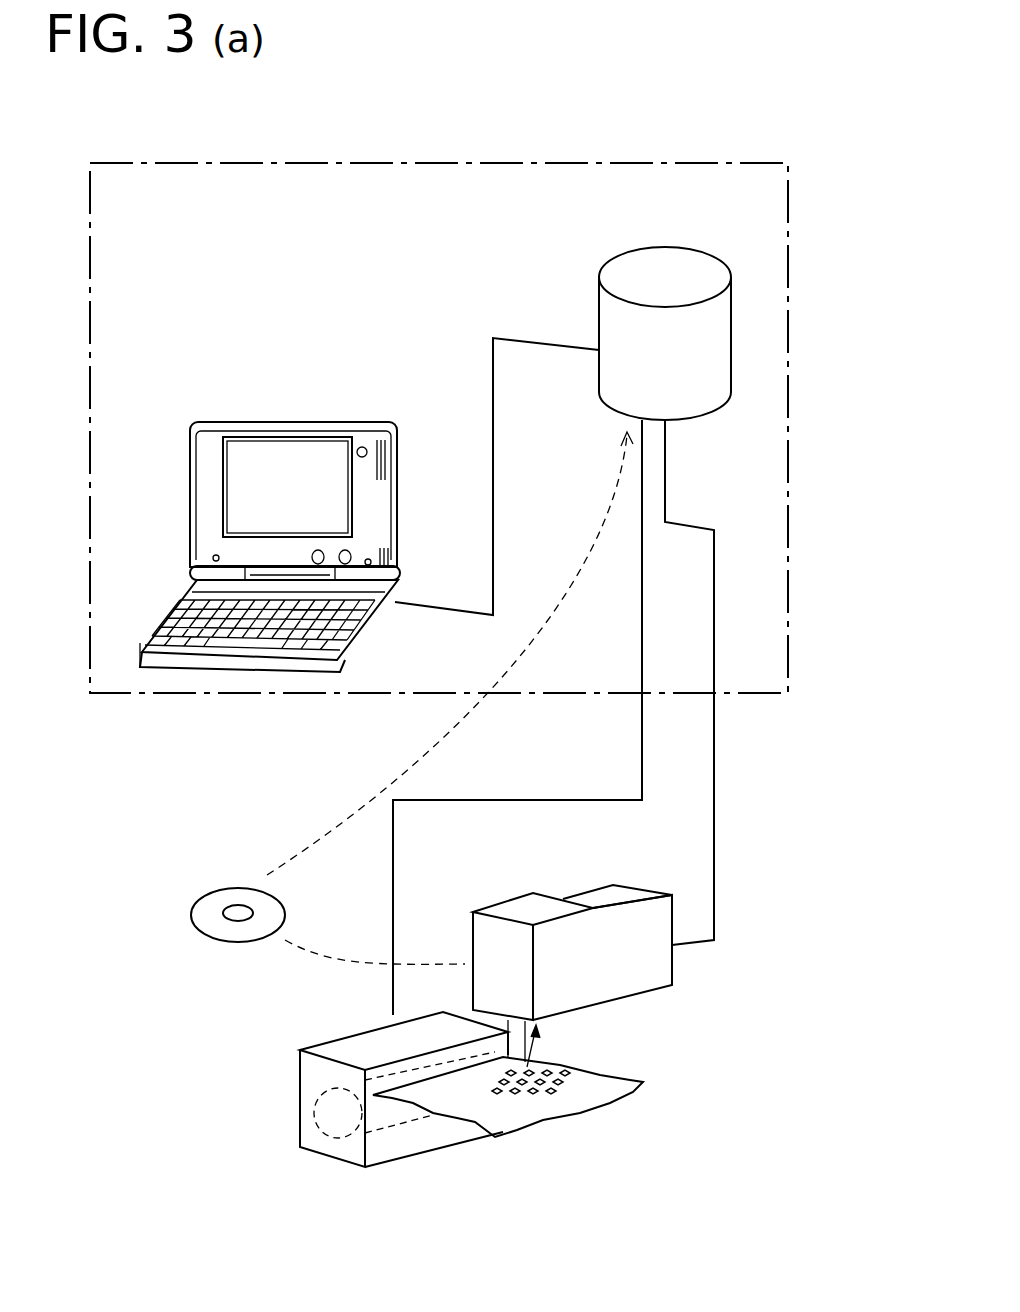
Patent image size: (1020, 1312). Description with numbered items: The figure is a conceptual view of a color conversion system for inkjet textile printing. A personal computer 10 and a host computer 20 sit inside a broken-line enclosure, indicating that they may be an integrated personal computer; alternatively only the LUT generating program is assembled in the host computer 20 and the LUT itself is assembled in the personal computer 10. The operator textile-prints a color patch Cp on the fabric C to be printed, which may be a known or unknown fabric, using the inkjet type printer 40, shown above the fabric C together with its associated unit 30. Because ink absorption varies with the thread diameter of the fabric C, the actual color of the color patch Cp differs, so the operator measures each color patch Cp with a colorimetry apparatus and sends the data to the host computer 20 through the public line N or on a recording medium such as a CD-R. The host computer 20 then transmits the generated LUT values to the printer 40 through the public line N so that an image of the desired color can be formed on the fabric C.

The personal computer 10 is at (285, 414).
The host computer 20 is at (660, 252).
The printer 30 is at (610, 990).
The inkjet type printer 40 is at (430, 1150).
The public line N is at (493, 462).
The fabric C is at (553, 1120).
The color patch Cp is at (585, 1078).
The recording medium CD-R is at (228, 938).